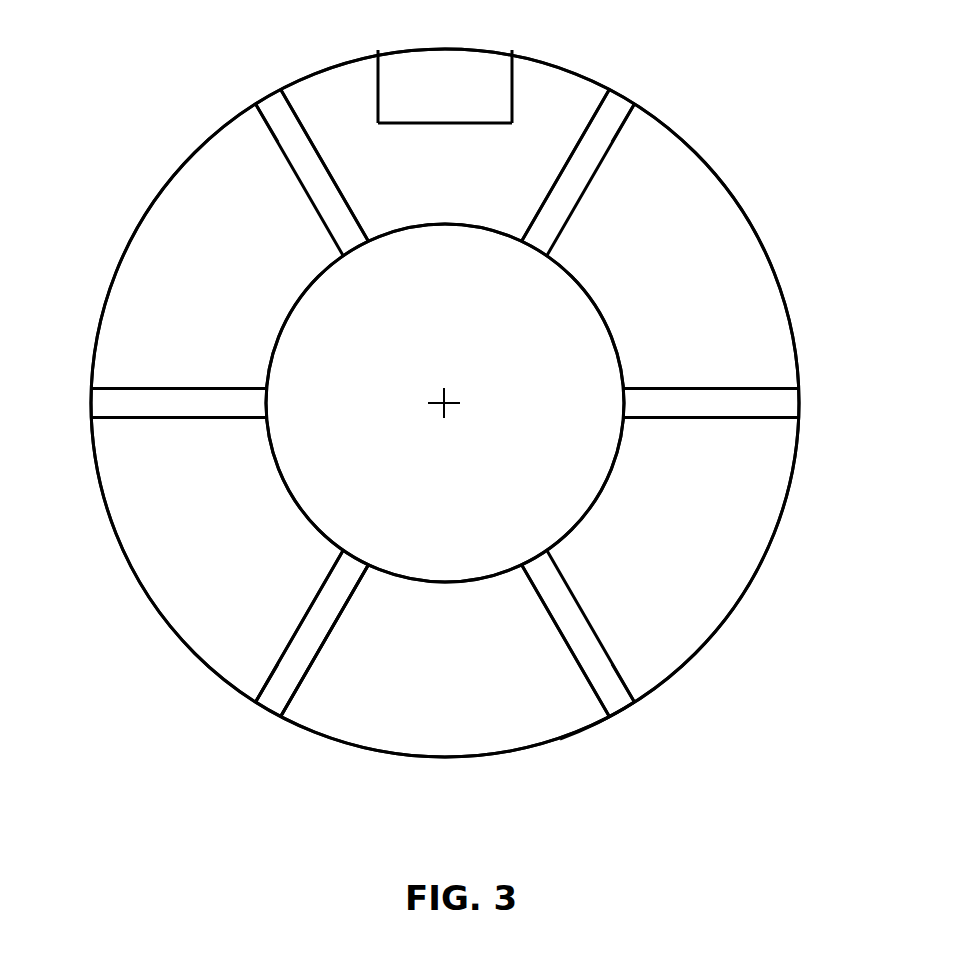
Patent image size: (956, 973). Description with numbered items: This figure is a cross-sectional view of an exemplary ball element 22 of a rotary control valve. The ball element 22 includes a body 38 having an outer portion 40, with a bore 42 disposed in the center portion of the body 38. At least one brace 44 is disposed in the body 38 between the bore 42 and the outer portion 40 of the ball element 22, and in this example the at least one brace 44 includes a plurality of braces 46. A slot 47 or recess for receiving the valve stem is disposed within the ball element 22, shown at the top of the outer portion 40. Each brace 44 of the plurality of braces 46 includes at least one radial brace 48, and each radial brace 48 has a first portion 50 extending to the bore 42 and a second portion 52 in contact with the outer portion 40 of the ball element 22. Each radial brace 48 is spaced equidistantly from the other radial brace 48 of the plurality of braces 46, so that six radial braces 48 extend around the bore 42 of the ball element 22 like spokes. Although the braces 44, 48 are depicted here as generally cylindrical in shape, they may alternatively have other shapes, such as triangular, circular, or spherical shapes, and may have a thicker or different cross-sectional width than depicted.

The ball element 22 is at (453, 425).
The body 38 is at (207, 580).
The outer portion 40 is at (120, 548).
The bore 42 is at (337, 497).
The brace 44 is at (300, 700).
The plurality of braces 46 is at (628, 725).
The slot 47 is at (375, 88).
The radial brace 48 is at (296, 166).
The first portion 50 is at (320, 216).
The second portion 52 is at (270, 133).